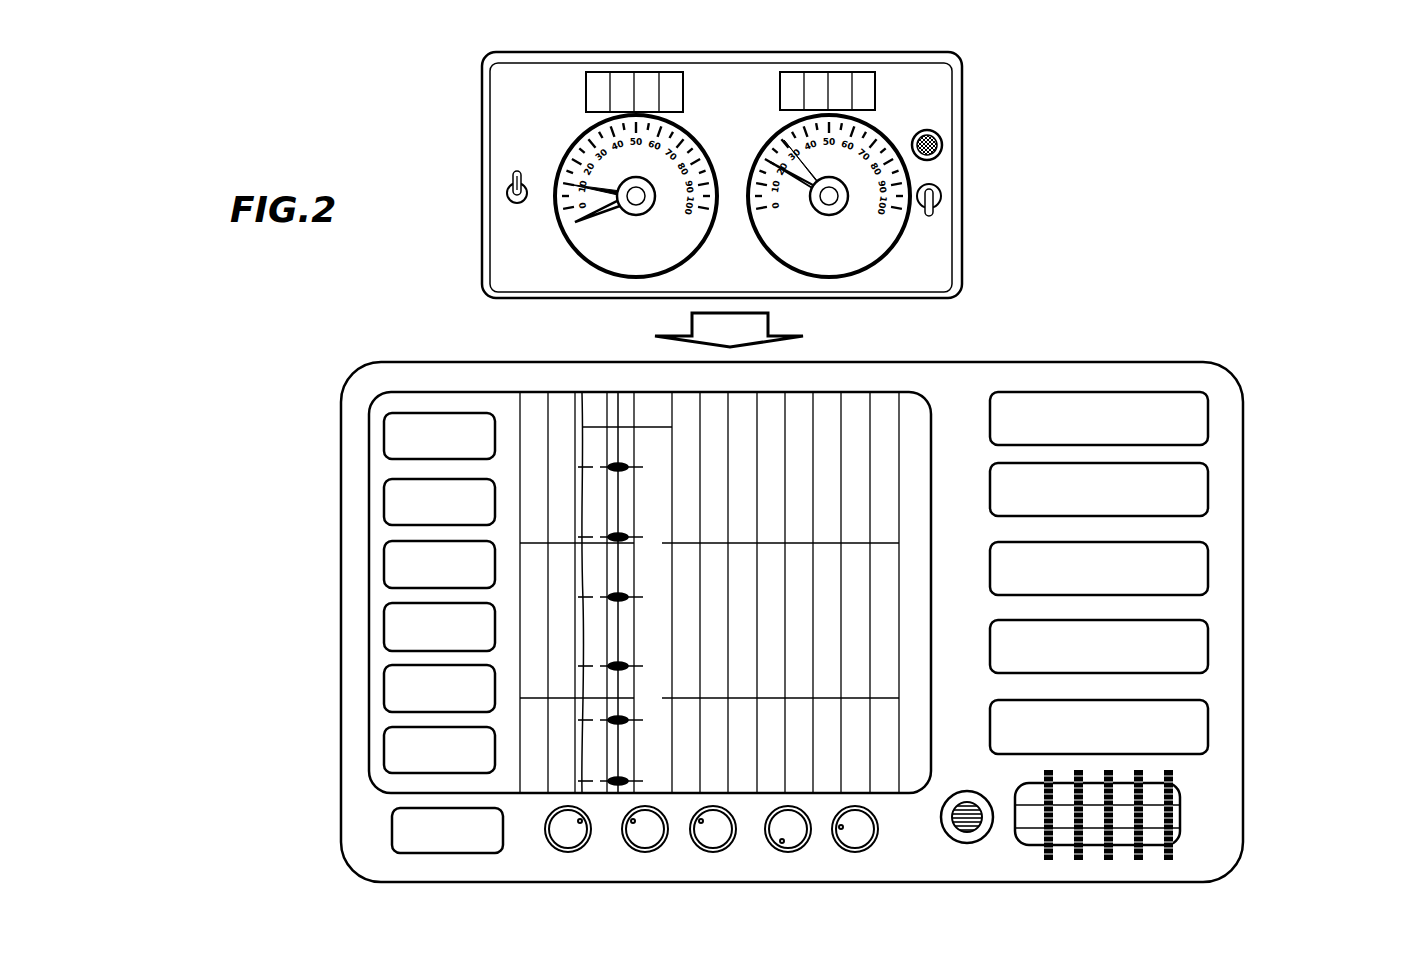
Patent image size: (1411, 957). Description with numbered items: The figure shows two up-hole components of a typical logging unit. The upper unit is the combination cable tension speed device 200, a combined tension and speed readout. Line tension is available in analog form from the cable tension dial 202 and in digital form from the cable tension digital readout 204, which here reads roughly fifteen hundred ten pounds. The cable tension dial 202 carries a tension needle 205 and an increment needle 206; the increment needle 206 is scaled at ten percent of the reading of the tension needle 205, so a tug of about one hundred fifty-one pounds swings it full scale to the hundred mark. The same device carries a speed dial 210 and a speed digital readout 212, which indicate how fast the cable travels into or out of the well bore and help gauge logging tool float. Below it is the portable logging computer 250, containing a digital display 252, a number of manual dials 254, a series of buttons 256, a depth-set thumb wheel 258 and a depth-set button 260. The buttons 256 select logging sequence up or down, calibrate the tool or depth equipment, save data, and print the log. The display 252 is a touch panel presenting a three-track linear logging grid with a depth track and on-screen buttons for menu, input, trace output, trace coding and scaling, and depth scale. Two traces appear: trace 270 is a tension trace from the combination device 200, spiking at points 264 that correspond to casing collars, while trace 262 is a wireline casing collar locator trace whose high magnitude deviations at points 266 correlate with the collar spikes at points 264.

The combination cable tension speed device 200 is at (1170, 184).
The cable tension dial 202 is at (625, 229).
The cable tension digital readout 204 is at (586, 91).
The tension needle 205 is at (592, 192).
The increment needle 206 is at (590, 216).
The speed dial 210 is at (930, 257).
The speed digital readout 212 is at (875, 88).
The logging computer 250 is at (1379, 604).
The digital display 252 is at (353, 516).
The manual dials 254 is at (715, 828).
The buttons 256 is at (1195, 490).
The depth-set thumb wheel 258 is at (1173, 817).
The depth-set button 260 is at (963, 833).
The trace 262 is at (618, 493).
The points 264 is at (582, 537).
The points 266 is at (632, 597).
The trace 270 is at (672, 427).